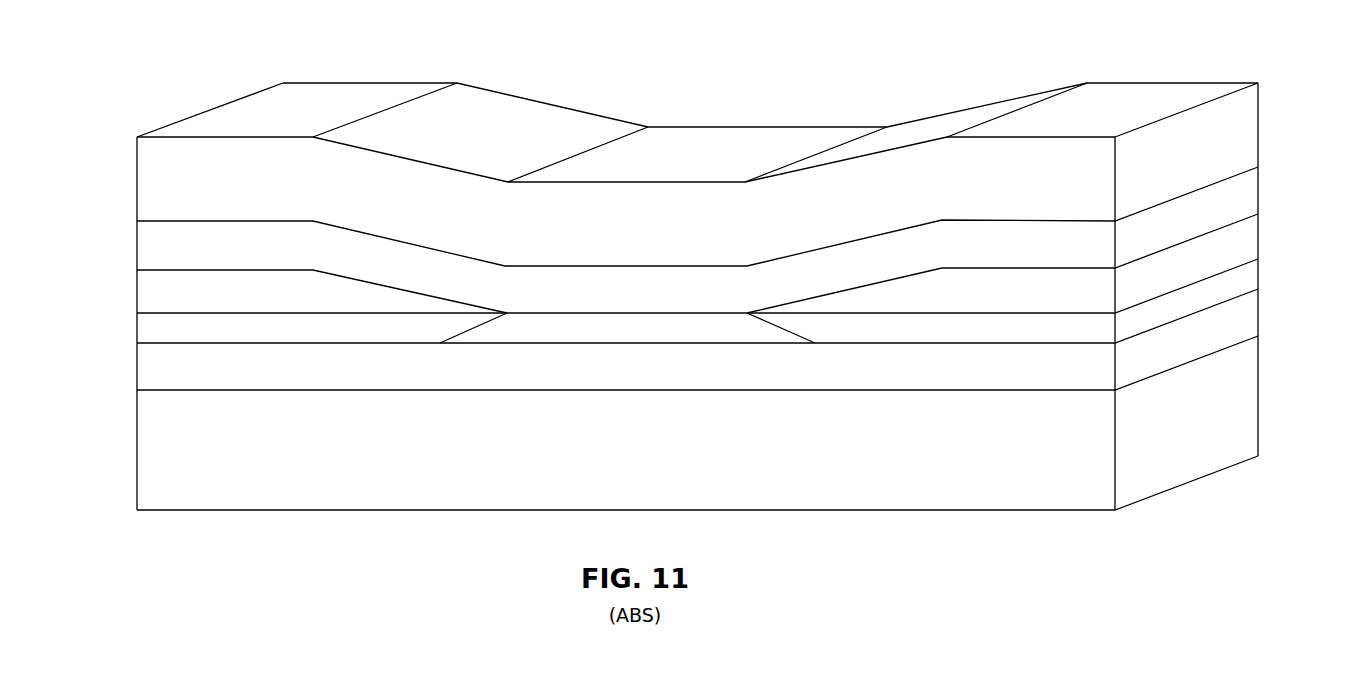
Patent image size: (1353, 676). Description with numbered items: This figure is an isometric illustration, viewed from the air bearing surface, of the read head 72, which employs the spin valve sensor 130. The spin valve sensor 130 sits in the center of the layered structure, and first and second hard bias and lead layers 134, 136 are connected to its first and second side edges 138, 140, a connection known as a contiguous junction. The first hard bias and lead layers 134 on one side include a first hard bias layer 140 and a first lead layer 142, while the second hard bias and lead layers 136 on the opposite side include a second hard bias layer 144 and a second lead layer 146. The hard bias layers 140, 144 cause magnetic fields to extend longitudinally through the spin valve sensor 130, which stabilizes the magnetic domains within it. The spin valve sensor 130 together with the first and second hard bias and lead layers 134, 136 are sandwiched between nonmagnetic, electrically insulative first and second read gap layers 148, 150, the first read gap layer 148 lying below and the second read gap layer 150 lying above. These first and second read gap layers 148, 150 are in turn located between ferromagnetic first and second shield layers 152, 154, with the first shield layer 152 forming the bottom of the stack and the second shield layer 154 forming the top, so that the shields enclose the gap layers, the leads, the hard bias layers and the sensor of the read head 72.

The read head 72 is at (768, 102).
The spin valve sensor 130 is at (542, 313).
The first hard bias and lead layers 134 is at (133, 271).
The second hard bias and lead layers 136 is at (1270, 212).
The first side edge 138 is at (460, 336).
The first hard bias layer 140 is at (180, 330).
The first lead layer 142 is at (179, 280).
The second hard bias layer 144 is at (1065, 330).
The second lead layer 146 is at (1065, 280).
The first read gap layer 148 is at (777, 382).
The second read gap layer 150 is at (373, 250).
The first shield layer 152 is at (412, 495).
The second shield layer 154 is at (560, 115).